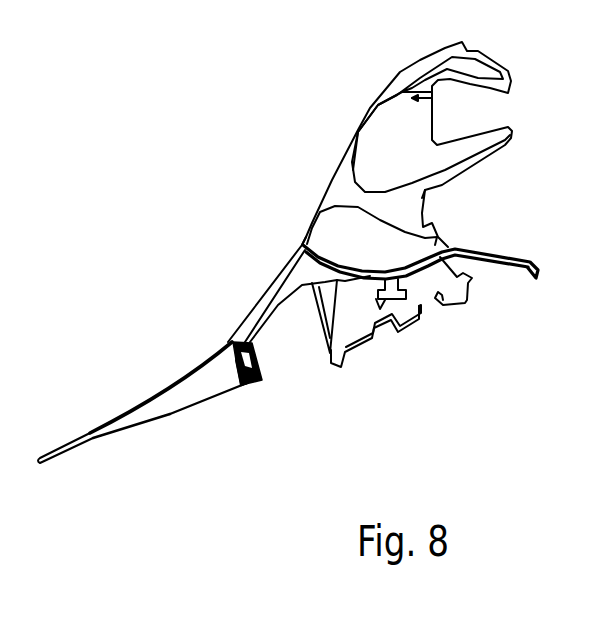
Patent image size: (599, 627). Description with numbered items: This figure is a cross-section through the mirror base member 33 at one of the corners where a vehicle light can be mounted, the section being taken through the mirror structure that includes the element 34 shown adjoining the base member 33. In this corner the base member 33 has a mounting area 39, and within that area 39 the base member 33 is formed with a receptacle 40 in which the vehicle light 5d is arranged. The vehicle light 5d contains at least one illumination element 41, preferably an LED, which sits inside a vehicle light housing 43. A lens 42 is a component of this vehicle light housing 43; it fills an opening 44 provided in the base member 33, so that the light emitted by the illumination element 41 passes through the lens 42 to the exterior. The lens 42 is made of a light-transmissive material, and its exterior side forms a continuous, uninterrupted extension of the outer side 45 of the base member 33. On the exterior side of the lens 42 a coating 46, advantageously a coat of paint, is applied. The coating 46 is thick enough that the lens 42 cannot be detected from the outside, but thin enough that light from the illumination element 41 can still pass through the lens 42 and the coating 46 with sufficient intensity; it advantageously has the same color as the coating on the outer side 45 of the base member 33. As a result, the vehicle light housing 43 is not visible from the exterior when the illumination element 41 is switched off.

The clip profile 34 is at (360, 120).
The outer side 45 is at (287, 267).
The base member 33 is at (267, 285).
The coating 46 is at (200, 372).
The lens 42 is at (148, 403).
The opening 44 is at (83, 433).
The vehicle light housing 43 is at (130, 430).
The mounting area 39 is at (193, 420).
The vehicle light 5d is at (201, 427).
The receptacle 40 is at (243, 386).
The illumination element 41 is at (241, 386).